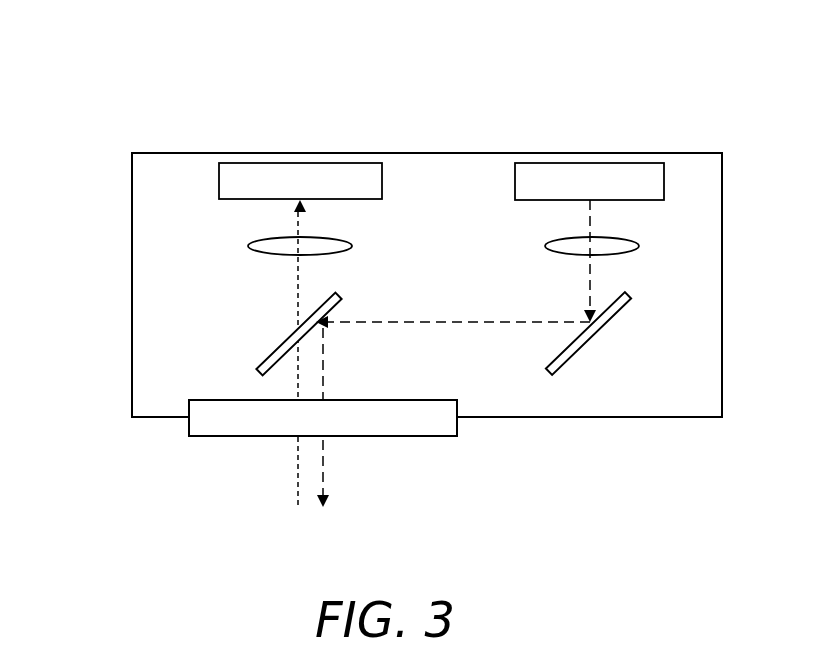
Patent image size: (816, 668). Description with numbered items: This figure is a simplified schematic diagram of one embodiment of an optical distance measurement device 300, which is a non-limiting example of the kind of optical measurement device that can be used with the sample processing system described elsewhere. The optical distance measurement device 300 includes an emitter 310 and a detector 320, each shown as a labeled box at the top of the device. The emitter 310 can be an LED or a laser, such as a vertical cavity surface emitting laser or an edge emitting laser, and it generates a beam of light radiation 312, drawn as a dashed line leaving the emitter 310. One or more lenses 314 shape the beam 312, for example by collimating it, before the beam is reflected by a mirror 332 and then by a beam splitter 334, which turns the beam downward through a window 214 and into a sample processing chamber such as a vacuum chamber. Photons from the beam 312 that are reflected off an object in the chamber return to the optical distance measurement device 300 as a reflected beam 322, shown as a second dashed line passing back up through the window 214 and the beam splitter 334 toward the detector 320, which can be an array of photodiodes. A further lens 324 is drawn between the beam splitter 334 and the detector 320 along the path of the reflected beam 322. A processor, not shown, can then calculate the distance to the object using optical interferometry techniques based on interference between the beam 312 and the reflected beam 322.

The optical distance measurement device 300 is at (142, 100).
The detector 320 is at (300, 181).
The emitter 310 is at (589, 181).
The detector lens 324 is at (354, 247).
The lenses 314 is at (541, 246).
The beam of light radiation 312 is at (592, 225).
The reflected beam 322 is at (296, 307).
The mirror 332 is at (600, 328).
The beam splitter 334 is at (262, 372).
The window 214 is at (323, 418).